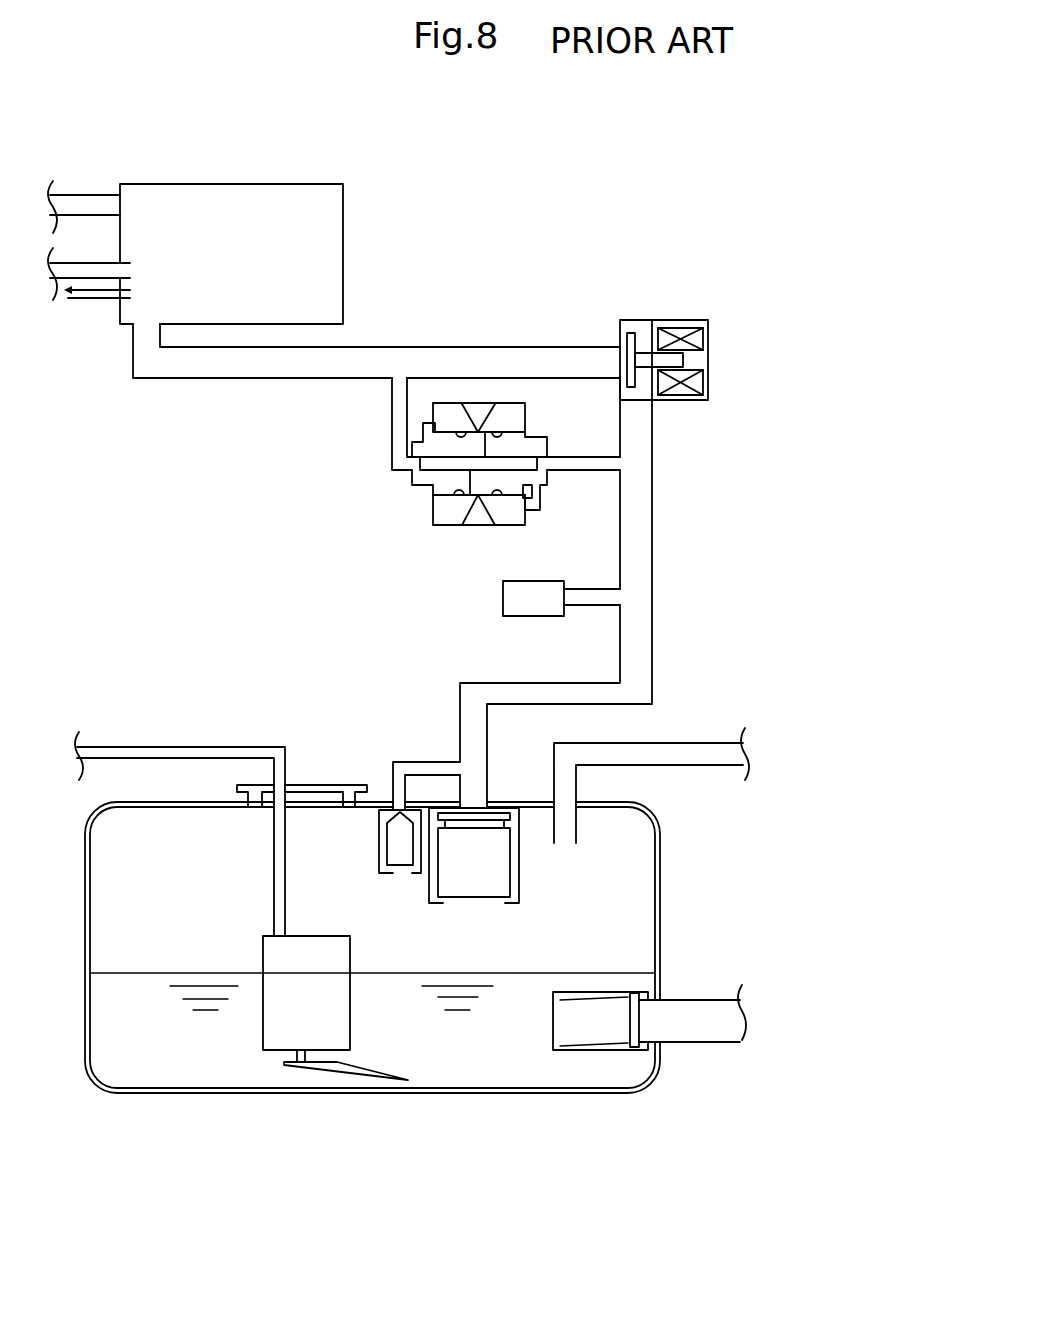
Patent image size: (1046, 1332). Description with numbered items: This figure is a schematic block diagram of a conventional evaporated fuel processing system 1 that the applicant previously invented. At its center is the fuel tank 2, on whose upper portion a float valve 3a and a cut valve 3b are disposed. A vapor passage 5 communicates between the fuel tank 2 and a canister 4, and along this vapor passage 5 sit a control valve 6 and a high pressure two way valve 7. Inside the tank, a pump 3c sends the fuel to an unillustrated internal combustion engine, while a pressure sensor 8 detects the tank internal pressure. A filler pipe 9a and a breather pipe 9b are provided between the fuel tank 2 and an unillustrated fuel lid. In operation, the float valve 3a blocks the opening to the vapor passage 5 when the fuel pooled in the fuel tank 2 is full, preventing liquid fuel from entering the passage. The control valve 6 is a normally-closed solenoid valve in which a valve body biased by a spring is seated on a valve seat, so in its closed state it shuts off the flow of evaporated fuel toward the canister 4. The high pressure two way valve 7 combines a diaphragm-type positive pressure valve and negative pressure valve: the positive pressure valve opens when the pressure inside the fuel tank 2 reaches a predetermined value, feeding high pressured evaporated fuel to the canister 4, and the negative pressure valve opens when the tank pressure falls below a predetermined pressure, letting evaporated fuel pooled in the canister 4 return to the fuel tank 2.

The evaporated fuel processing system 1 is at (624, 173).
The fuel tank 2 is at (148, 1095).
The float valve 3a is at (490, 887).
The cut valve 3b is at (393, 858).
The pump 3c is at (278, 1037).
The canister 4 is at (247, 203).
The vapor passage 5 is at (450, 363).
The control valve 6 is at (673, 323).
The high pressure two way valve 7 is at (422, 480).
The pressure sensor 8 is at (517, 593).
The filler pipe 9a is at (698, 1023).
The breather pipe 9b is at (698, 757).